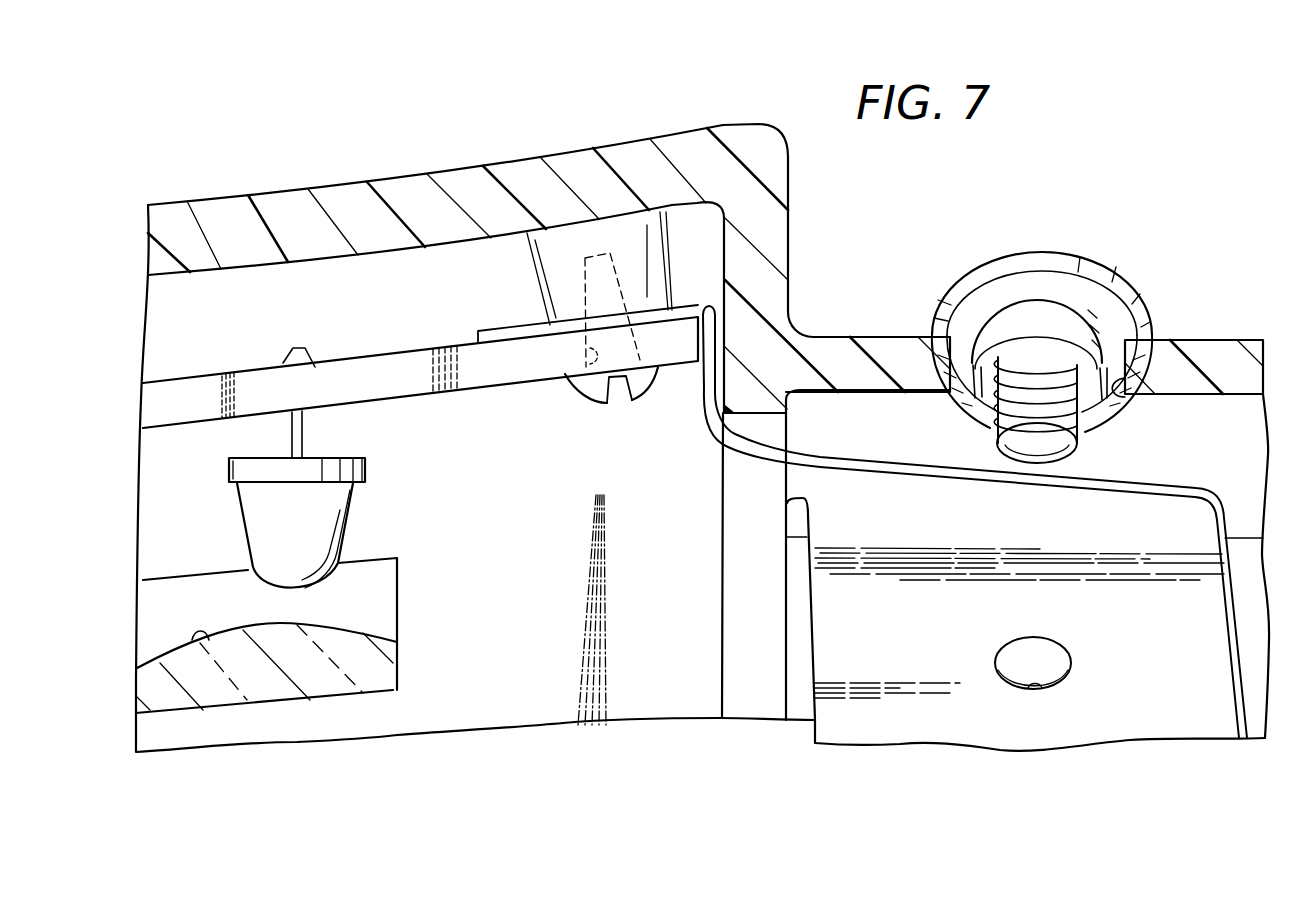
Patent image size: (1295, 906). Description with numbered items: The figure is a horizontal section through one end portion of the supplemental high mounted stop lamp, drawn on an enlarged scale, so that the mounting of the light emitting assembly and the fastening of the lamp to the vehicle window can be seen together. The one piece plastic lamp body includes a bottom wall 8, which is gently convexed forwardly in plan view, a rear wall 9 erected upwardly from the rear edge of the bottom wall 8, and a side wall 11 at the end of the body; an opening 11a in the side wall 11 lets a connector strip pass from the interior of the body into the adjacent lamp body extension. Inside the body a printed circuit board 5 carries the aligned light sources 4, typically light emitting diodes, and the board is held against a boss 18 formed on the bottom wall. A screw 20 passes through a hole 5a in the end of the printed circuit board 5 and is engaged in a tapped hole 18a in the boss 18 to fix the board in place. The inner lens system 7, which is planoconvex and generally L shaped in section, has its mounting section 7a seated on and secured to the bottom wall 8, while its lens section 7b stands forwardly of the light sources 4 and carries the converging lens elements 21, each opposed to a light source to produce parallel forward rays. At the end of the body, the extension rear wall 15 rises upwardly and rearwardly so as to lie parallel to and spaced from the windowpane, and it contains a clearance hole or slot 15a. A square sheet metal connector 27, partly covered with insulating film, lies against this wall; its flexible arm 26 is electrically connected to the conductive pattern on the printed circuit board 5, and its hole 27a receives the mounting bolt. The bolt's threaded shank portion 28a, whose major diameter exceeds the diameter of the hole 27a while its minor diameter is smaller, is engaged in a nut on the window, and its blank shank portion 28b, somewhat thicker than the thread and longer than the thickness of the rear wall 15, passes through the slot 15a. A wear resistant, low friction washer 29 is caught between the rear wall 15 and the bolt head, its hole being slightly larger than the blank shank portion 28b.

The light source 4 is at (350, 523).
The printed circuit board 5 is at (377, 356).
The hole 5a is at (590, 355).
The inner lens system 7 is at (297, 703).
The mounting section 7a is at (383, 600).
The lens section 7b is at (388, 673).
The bottom wall 8 is at (536, 697).
The rear wall 9 is at (455, 175).
The side wall 11 is at (727, 677).
The opening 11a is at (775, 435).
The rear wall 15 is at (1247, 338).
The clearance hole or slot 15a is at (1127, 377).
The boss 18 is at (672, 256).
The tapped hole 18a is at (591, 296).
The screw 20 is at (569, 397).
The converging lens element 21 is at (192, 640).
The flexible arm 26 is at (743, 470).
The sheet metal connector 27 is at (890, 727).
The hole 27a is at (1040, 689).
The threaded shank portion 28a is at (1035, 367).
The blank shank portion 28b is at (1090, 327).
The washer 29 is at (947, 290).